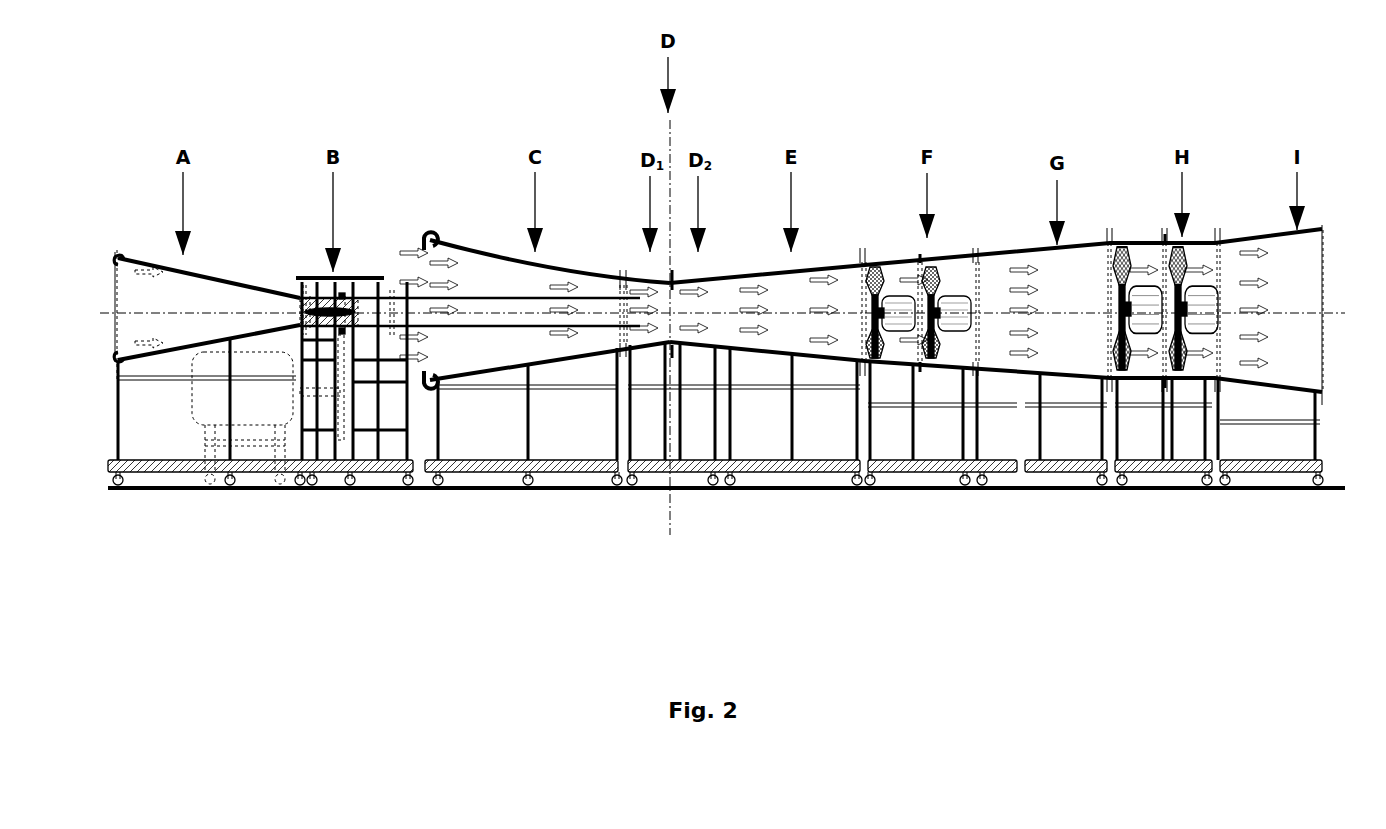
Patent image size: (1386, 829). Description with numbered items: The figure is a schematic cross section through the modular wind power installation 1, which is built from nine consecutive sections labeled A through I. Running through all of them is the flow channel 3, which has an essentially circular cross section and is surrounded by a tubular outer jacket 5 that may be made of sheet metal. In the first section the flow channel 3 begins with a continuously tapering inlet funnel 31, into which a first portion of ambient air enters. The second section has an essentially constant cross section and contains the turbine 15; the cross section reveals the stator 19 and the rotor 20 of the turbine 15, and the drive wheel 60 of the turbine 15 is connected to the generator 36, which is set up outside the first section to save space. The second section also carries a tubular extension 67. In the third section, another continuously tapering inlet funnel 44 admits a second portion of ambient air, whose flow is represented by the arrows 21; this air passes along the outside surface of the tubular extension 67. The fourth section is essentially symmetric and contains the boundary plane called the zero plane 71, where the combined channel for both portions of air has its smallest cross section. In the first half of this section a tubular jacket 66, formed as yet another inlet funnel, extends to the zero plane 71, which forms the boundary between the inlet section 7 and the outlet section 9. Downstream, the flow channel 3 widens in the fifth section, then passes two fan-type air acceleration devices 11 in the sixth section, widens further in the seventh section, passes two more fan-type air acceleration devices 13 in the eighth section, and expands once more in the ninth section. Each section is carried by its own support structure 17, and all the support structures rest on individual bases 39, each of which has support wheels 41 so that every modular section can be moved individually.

The wind power installation 1 is at (437, 88).
The flow channel 3 is at (100, 312).
The tubular outer jacket 5 is at (245, 286).
The inlet section 7 is at (347, 515).
The outlet section 9 is at (973, 510).
The air acceleration device 11 is at (898, 253).
The air acceleration device 13 is at (1124, 238).
The turbine 15 is at (340, 287).
The support structure 17 is at (144, 441).
The stator 19 is at (306, 293).
The rotor 20 is at (351, 300).
The arrows 21 is at (528, 261).
The inlet funnel 31 is at (190, 272).
The generator 36 is at (265, 410).
The base 39 is at (655, 464).
The support wheels 41 is at (530, 471).
The inlet funnel 44 is at (563, 287).
The drive wheel 60 is at (338, 285).
The tubular jacket 66 is at (698, 264).
The tubular extension 67 is at (470, 300).
The 0 plane 71 is at (674, 535).